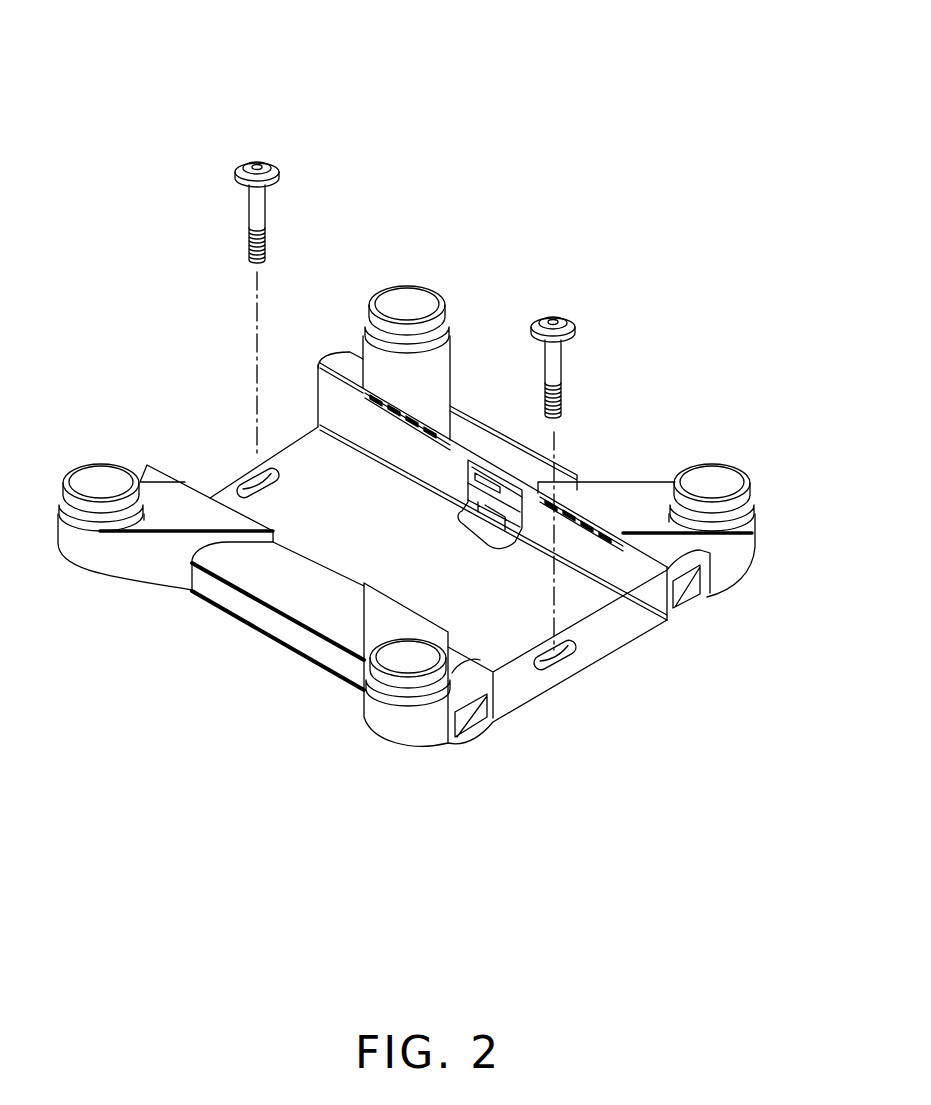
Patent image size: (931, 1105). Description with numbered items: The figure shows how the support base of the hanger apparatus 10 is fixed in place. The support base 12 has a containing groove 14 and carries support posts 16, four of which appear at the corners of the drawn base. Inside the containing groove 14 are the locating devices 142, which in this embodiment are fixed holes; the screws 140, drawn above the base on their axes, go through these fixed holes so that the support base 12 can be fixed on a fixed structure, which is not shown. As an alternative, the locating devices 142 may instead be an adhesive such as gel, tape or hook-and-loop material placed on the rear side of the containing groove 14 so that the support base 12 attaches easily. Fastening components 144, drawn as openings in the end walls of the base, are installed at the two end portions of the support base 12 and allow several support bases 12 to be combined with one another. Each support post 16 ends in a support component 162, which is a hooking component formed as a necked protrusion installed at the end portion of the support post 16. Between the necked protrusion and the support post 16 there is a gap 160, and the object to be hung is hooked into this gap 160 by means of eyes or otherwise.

The hanger apparatus 10 is at (446, 43).
The support base 12 is at (490, 442).
The containing groove 14 is at (222, 490).
The support post 16 is at (380, 628).
The screw 140 is at (262, 201).
The locating device 142 is at (563, 667).
The fastening component 144 is at (683, 593).
The gap 160 is at (755, 501).
The support component 162 is at (702, 481).